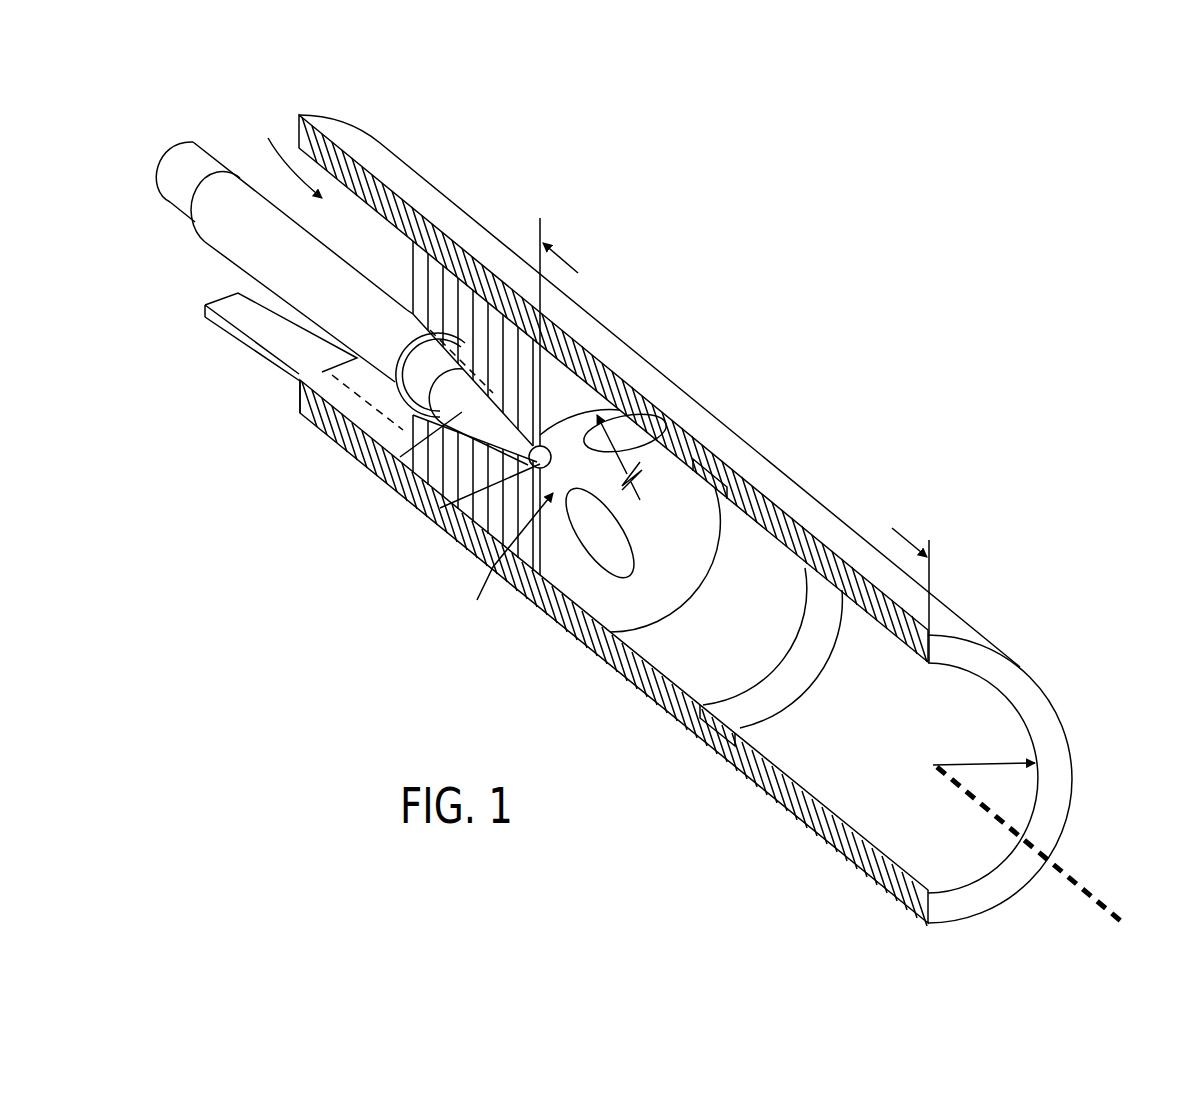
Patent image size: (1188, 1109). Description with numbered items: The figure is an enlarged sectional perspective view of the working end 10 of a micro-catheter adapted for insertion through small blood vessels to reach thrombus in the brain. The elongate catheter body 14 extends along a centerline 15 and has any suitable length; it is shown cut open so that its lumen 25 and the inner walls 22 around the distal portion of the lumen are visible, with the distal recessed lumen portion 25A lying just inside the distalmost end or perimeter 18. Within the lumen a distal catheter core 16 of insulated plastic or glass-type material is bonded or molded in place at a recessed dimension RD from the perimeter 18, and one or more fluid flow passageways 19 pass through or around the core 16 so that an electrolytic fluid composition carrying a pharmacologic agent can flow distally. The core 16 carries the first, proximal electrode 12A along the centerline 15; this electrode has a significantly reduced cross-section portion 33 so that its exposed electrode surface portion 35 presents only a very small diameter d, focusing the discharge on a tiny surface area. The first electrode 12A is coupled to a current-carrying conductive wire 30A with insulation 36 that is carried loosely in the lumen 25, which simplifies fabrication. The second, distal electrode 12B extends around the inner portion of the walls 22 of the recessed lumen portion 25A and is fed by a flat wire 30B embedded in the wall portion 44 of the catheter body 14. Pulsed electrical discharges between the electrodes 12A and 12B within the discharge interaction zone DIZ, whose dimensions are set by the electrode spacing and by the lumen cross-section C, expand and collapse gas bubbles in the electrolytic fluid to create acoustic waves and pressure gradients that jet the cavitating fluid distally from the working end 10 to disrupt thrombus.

The working end 10 is at (748, 253).
The catheter body 14 is at (435, 198).
The walls 22 is at (813, 765).
The wall portion 44 is at (323, 427).
The first electrode 12A is at (430, 508).
The second electrode 12B is at (707, 740).
The distal catheter core 16 is at (490, 310).
The recessed dimension RD is at (562, 257).
The insulation 36 is at (233, 237).
The conductive wire 30A is at (177, 190).
The flat wire 30B is at (260, 357).
The reduced cross-section portion 33 is at (390, 463).
The exposed electrode surface portion 35 is at (462, 522).
The lumen 25 is at (290, 156).
The distal recessed lumen portion 25A is at (673, 655).
The fluid flow passageway 19 is at (607, 553).
The discharge interaction zone DIZ is at (657, 487).
The diameter d is at (510, 558).
The distalmost end 18 is at (1045, 720).
The lumen cross-section C is at (985, 763).
The centerline 15 is at (1105, 912).